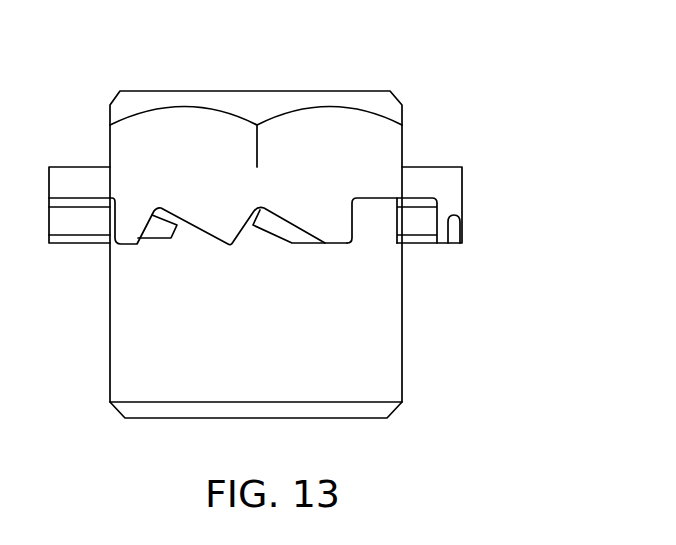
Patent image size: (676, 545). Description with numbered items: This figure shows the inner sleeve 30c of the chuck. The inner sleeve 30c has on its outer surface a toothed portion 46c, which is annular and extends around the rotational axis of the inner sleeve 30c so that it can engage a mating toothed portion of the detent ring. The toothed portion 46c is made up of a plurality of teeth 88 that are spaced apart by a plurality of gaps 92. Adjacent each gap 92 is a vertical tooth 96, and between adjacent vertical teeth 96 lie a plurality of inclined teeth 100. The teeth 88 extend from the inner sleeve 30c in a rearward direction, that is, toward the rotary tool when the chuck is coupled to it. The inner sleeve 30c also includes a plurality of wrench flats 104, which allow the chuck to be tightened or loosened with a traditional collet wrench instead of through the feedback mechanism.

The inner sleeve 30c is at (272, 70).
The wrench flats 104 is at (117, 142).
The teeth 88 is at (59, 262).
The inclined teeth 100 is at (231, 262).
The gaps 92 is at (366, 199).
The vertical tooth 96 is at (429, 218).
The toothed portion 46c is at (477, 230).